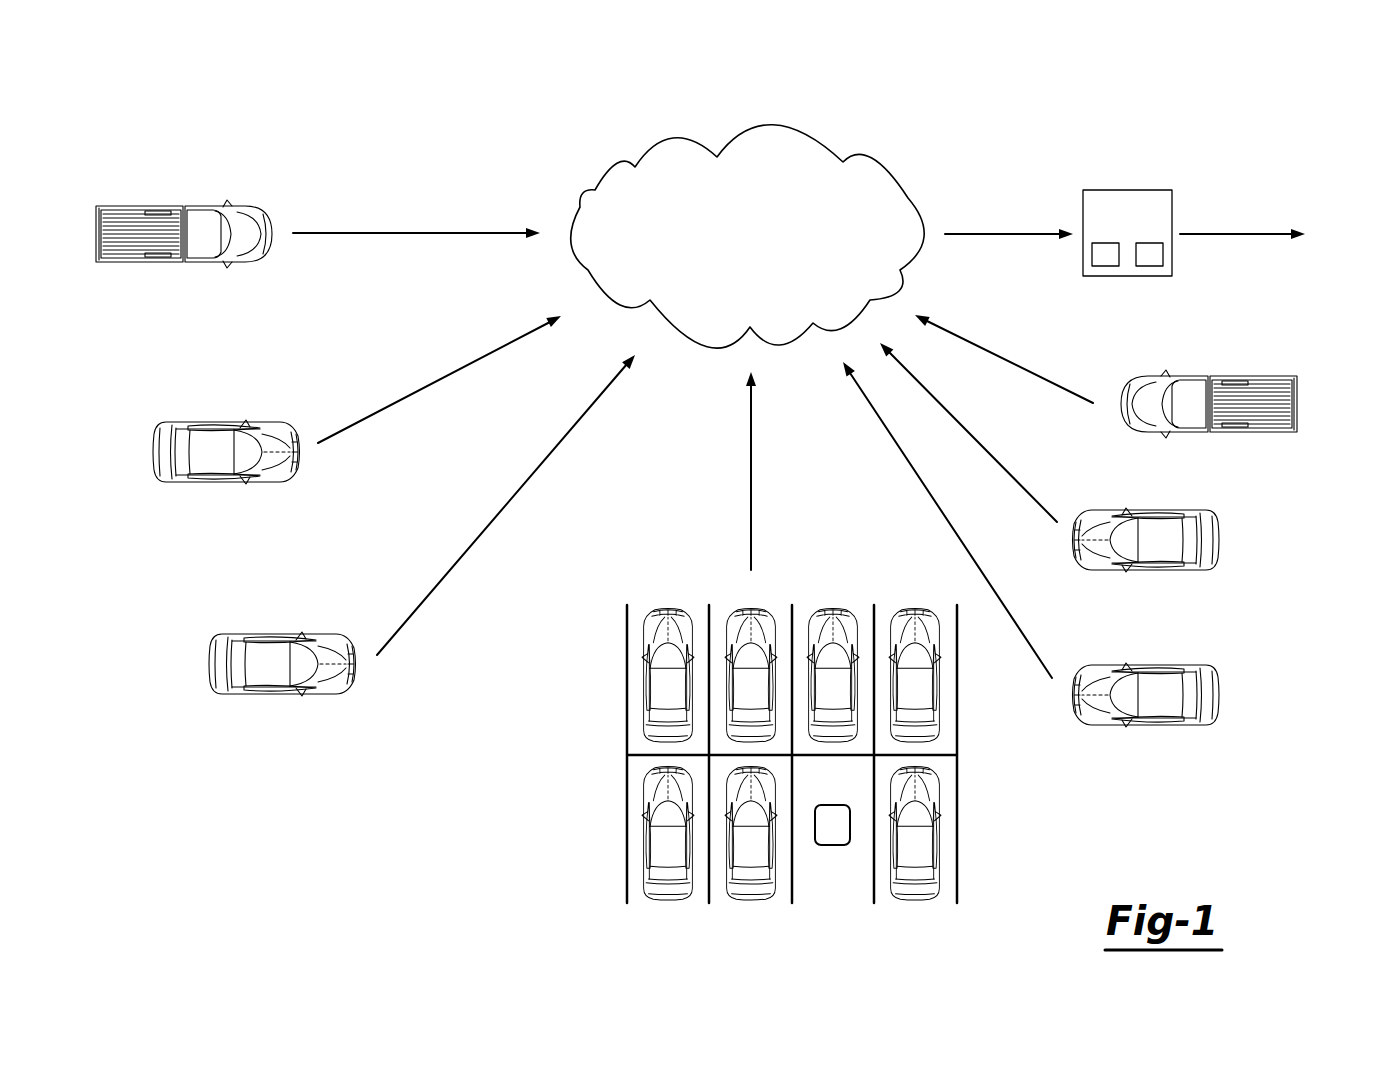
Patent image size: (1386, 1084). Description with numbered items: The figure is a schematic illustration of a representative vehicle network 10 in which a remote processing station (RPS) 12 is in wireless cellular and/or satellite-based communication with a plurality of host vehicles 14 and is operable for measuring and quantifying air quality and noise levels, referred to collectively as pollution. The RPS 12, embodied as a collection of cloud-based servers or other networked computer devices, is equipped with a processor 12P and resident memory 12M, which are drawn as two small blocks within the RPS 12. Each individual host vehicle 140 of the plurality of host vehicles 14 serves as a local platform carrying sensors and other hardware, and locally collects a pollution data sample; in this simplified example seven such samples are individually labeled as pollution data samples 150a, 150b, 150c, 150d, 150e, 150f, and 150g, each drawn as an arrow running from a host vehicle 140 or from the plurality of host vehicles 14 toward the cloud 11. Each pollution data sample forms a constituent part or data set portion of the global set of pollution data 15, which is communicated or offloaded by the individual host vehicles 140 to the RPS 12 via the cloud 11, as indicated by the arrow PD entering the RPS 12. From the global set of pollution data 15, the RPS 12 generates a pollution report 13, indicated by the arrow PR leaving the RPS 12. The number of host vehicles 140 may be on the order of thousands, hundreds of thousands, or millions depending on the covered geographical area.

The vehicle network 10 is at (1212, 86).
The cloud 11 is at (735, 247).
The remote processing station (RPS) 12 is at (1128, 190).
The processor 12P is at (1106, 266).
The resident memory 12M is at (1150, 266).
The pollution report 13 is at (1248, 232).
The plurality of host vehicles 14 is at (1260, 612).
The global set of pollution data 15 is at (985, 232).
The host vehicle 140 is at (163, 205).
The pollution data sample 150a is at (395, 232).
The pollution data sample 150b is at (433, 380).
The pollution data sample 150c is at (473, 540).
The pollution data sample 150d is at (750, 465).
The pollution data sample 150e is at (935, 502).
The pollution data sample 150f is at (972, 436).
The pollution data sample 150g is at (1007, 360).
The pollution data arrow PD is at (1030, 236).
The pollution report arrow PR is at (1225, 236).